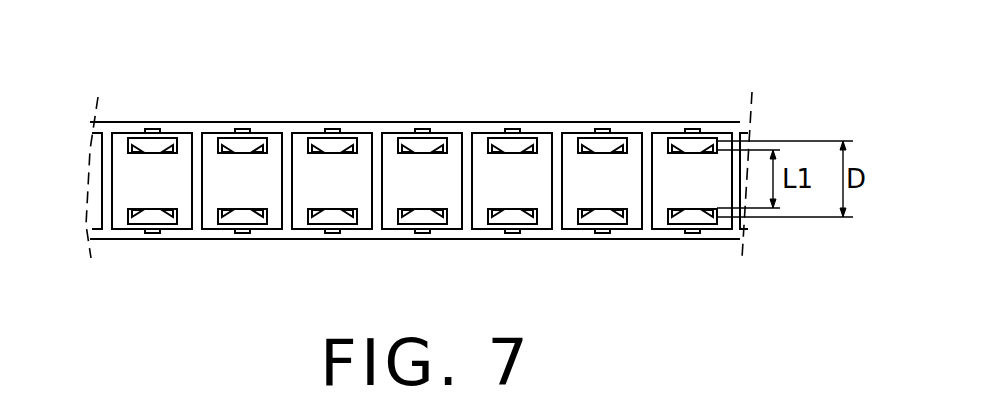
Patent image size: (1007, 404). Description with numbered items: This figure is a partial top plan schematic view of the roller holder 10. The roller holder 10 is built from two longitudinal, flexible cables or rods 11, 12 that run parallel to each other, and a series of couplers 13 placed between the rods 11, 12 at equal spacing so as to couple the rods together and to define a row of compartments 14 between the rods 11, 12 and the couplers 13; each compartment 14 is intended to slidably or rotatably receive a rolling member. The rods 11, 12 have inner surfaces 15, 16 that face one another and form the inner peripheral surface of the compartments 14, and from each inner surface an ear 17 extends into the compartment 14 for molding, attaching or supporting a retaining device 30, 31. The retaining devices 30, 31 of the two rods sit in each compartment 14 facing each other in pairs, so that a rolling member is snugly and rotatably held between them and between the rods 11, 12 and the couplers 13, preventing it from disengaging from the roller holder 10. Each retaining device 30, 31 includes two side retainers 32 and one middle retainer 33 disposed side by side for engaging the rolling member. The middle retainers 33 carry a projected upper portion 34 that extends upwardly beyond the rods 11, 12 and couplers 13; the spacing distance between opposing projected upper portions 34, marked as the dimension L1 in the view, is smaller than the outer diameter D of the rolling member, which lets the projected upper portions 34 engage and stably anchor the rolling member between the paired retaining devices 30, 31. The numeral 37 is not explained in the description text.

The roller holder 10 is at (690, 63).
The rod 11 is at (537, 122).
The rod 12 is at (625, 227).
The coupler 13 is at (645, 177).
The compartment 14 is at (123, 177).
The inner surface 15 is at (283, 148).
The inner surface 16 is at (280, 220).
The ear 17 is at (600, 138).
The retaining device 30 is at (142, 141).
The retaining device 31 is at (148, 220).
The side retainer 32 is at (441, 141).
The middle retainer 33 is at (425, 150).
The projected upper portion 34 is at (243, 150).
The slot 37 is at (232, 213).